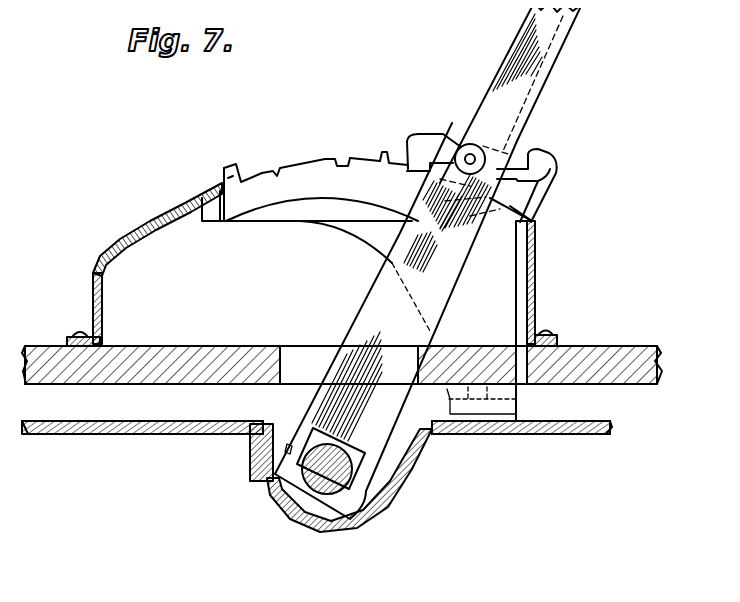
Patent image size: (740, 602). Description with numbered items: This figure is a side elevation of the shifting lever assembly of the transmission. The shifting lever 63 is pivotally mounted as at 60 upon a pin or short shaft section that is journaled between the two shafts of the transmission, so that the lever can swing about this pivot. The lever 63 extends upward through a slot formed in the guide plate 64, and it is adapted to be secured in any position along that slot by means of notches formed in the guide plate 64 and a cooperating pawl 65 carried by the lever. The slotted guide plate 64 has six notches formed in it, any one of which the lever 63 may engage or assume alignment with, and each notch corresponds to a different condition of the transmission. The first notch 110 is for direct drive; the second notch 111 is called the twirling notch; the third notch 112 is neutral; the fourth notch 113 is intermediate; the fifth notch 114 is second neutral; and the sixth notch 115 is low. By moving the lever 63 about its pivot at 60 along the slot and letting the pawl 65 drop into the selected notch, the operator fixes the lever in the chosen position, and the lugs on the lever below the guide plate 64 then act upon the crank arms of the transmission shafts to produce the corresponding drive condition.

The pivot 60 is at (285, 478).
The shifting lever 63 is at (538, 73).
The guide plate 64 is at (222, 192).
The pawl 65 is at (445, 145).
The first notch 110 is at (241, 180).
The second notch 111 is at (278, 172).
The third notch 112 is at (330, 157).
The fourth notch 113 is at (350, 157).
The fifth notch 114 is at (384, 152).
The sixth notch 115 is at (409, 145).